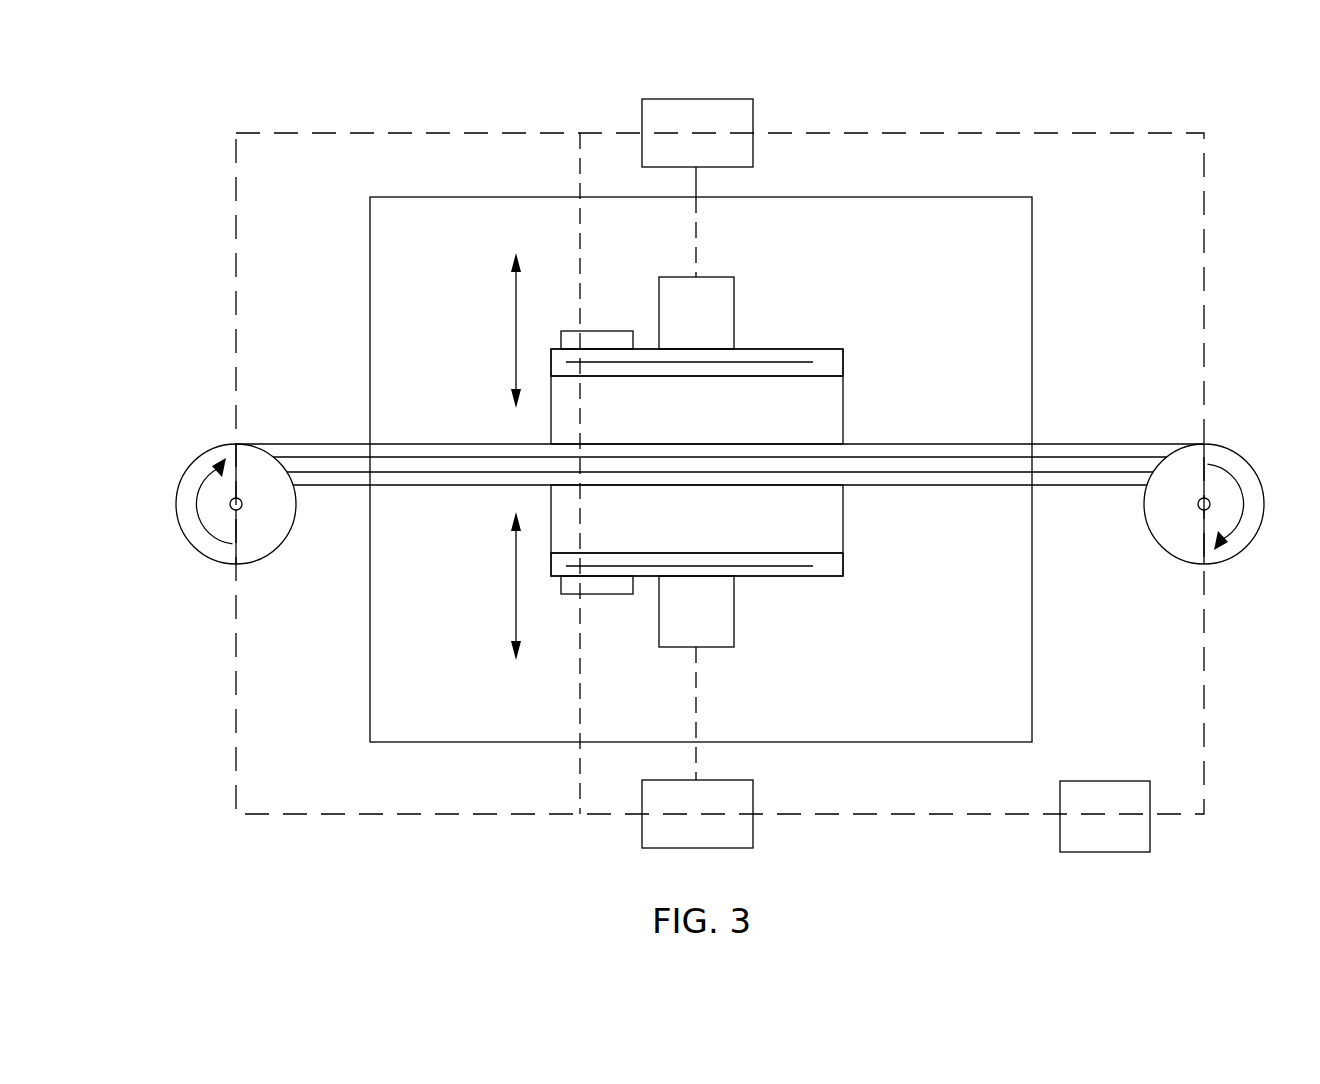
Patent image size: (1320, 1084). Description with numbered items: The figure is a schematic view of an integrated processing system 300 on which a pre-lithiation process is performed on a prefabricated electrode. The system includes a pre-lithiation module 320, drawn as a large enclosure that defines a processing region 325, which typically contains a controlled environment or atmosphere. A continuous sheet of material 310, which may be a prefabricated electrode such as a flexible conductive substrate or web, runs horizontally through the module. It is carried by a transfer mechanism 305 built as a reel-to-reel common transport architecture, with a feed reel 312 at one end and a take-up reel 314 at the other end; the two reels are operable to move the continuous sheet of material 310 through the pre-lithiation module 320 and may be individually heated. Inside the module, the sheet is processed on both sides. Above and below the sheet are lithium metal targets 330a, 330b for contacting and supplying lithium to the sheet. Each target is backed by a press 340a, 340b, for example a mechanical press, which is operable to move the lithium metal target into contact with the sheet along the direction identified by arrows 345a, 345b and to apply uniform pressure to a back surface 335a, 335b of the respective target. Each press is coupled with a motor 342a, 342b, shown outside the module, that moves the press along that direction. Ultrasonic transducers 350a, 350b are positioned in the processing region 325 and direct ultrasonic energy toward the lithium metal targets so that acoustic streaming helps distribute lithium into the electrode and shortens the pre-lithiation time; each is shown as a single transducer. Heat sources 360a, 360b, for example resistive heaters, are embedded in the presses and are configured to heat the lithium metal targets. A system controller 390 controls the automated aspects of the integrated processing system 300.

The integrated processing system 300 is at (186, 104).
The transfer mechanism 305 is at (705, 470).
The continuous sheet of material 310 is at (322, 443).
The feed reel 312 is at (202, 553).
The take-up reel 314 is at (1228, 555).
The pre-lithiation module 320 is at (1033, 217).
The processing region 325 is at (970, 252).
The lithium metal target 330a is at (672, 417).
The lithium metal target 330b is at (672, 529).
The back surface 335a is at (822, 377).
The back surface 335b is at (814, 553).
The press 340a is at (826, 349).
The press 340b is at (818, 576).
The motor 342a is at (672, 146).
The motor 342b is at (672, 828).
The arrow 345a is at (516, 326).
The arrow 345b is at (516, 578).
The ultrasonic transducer 350a is at (605, 331).
The ultrasonic transducer 350b is at (605, 594).
The heat source 360a is at (753, 362).
The heat source 360b is at (777, 566).
The system controller 390 is at (1086, 830).